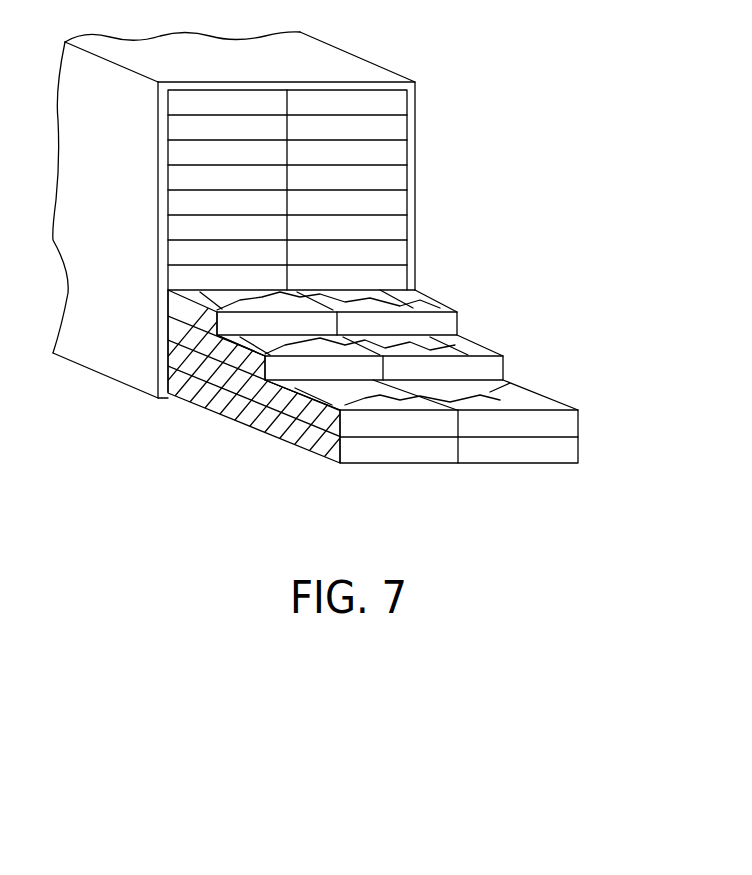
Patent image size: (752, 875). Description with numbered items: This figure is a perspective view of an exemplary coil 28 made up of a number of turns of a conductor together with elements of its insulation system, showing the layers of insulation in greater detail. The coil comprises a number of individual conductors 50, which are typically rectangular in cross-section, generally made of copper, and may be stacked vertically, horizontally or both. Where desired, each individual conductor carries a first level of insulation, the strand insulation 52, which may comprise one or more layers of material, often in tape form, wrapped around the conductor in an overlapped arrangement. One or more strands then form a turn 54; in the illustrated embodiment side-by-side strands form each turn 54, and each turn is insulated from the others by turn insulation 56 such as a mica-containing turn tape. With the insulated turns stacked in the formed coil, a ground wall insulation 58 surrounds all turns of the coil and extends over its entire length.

The rack 28 is at (441, 104).
The individual conductor 50 is at (392, 155).
The strand insulation 52 is at (333, 400).
The turn 54 is at (462, 322).
The hatched side face 56 is at (213, 298).
The ground wall insulation 58 is at (127, 192).